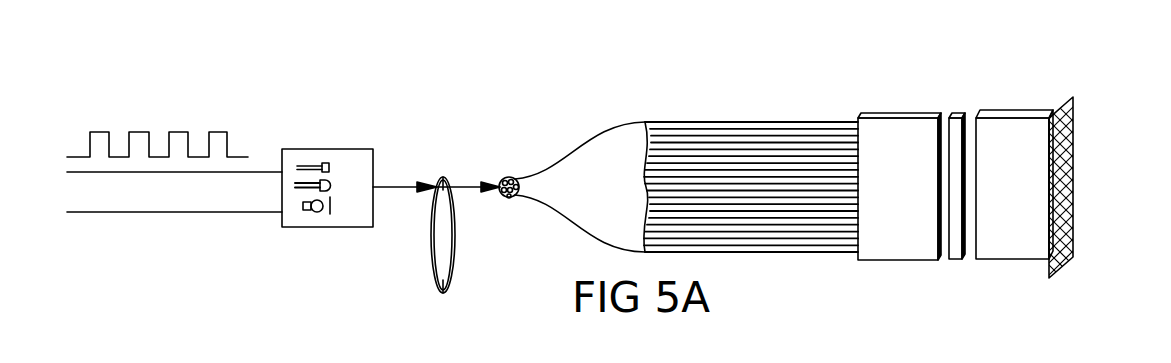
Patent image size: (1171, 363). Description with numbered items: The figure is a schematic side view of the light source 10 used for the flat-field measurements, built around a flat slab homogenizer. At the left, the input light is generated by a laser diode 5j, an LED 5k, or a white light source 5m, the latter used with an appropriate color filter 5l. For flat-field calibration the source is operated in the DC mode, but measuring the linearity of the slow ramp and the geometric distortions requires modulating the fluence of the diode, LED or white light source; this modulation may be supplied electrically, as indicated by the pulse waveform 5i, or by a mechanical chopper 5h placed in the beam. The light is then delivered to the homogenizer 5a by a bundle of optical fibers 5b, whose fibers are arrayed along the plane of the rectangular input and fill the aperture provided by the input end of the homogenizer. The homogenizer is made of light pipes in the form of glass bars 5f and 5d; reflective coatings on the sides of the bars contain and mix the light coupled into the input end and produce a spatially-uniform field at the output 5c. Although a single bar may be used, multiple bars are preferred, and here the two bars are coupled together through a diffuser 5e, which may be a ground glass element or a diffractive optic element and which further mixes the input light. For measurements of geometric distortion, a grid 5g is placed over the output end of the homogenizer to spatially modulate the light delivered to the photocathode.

The light source 10 is at (302, 149).
The electrical modulation 5i is at (227, 131).
The laser diode 5j is at (328, 163).
The LED 5k is at (332, 182).
The color filter 5l is at (330, 214).
The white light source 5m is at (317, 212).
The mechanical chopper 5h is at (445, 180).
The bundle of optical fibers 5b is at (836, 120).
The homogenizer 5a is at (923, 117).
The glass bar 5f is at (898, 155).
The diffuser 5e is at (958, 114).
The glass bar 5d is at (1040, 115).
The output 5c is at (1072, 102).
The grid 5g is at (1070, 115).